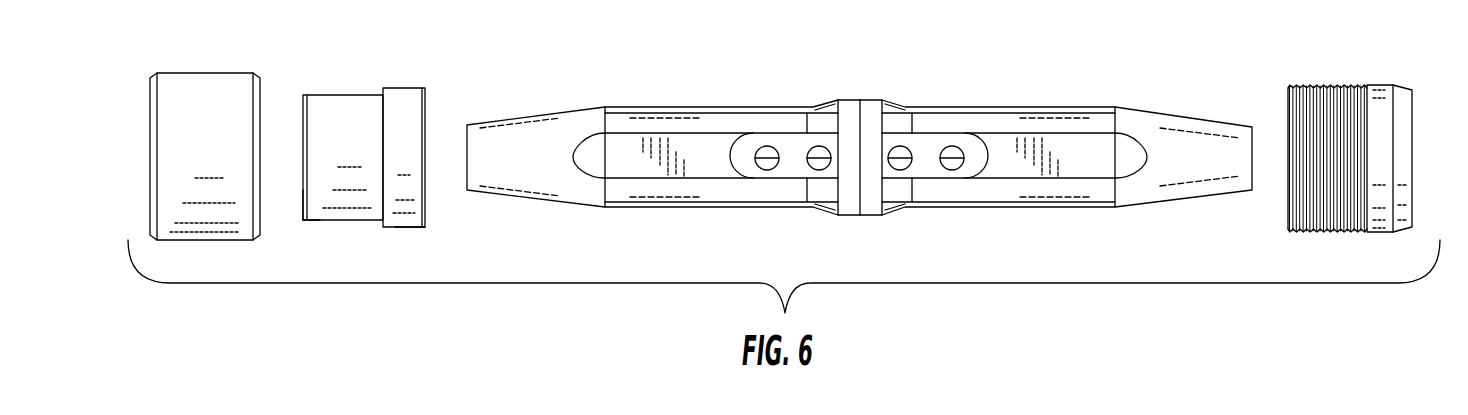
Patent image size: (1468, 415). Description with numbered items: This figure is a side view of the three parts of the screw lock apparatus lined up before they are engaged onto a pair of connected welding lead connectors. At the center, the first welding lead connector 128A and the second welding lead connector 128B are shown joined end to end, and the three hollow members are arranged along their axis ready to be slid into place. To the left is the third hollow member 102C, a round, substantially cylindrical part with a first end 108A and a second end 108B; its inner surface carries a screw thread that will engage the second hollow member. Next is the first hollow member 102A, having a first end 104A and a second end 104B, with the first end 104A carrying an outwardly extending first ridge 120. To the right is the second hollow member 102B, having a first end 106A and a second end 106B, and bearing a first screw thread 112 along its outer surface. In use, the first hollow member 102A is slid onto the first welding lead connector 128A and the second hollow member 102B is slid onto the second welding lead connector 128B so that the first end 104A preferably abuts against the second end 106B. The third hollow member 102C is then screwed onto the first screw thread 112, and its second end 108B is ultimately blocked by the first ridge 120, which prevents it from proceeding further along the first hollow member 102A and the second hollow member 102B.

The third hollow member 102C is at (218, 84).
The first end of the third hollow member 108A is at (259, 100).
The second end of the third hollow member 108B is at (150, 164).
The first hollow member 102A is at (340, 105).
The first end of the first hollow member 104A is at (426, 110).
The second end of the first hollow member 104B is at (302, 195).
The first ridge 120 is at (407, 217).
The first welding lead connector 128A is at (690, 145).
The second welding lead connector 128B is at (1060, 148).
The second end of the second hollow member 106B is at (1288, 122).
The second hollow member 102B is at (1382, 90).
The first end of the second hollow member 106A is at (1412, 112).
The first screw thread 112 is at (1331, 232).